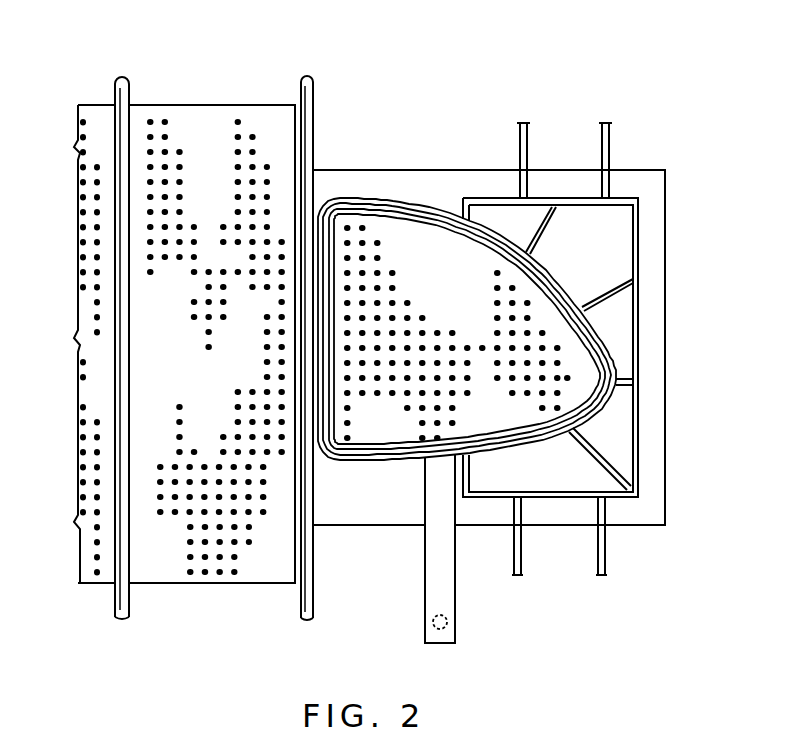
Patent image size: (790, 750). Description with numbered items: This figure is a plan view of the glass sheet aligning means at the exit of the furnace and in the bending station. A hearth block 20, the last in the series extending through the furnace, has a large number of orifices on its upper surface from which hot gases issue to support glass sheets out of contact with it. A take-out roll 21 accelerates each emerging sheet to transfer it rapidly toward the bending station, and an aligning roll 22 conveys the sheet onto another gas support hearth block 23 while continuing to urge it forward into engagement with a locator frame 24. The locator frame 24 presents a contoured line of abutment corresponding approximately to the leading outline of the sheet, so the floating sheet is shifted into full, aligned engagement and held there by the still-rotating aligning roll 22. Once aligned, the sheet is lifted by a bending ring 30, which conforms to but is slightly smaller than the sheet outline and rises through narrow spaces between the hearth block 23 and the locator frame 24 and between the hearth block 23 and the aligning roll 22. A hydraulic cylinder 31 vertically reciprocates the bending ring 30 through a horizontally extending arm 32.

The hearth block 20 is at (206, 104).
The take-out roll 21 is at (116, 84).
The aligning roll 22 is at (314, 84).
The hearth block 23 is at (388, 228).
The locator frame 24 is at (640, 332).
The bending ring 30 is at (372, 198).
The hydraulic cylinder 31 is at (448, 620).
The horizontally extending arm 32 is at (425, 598).